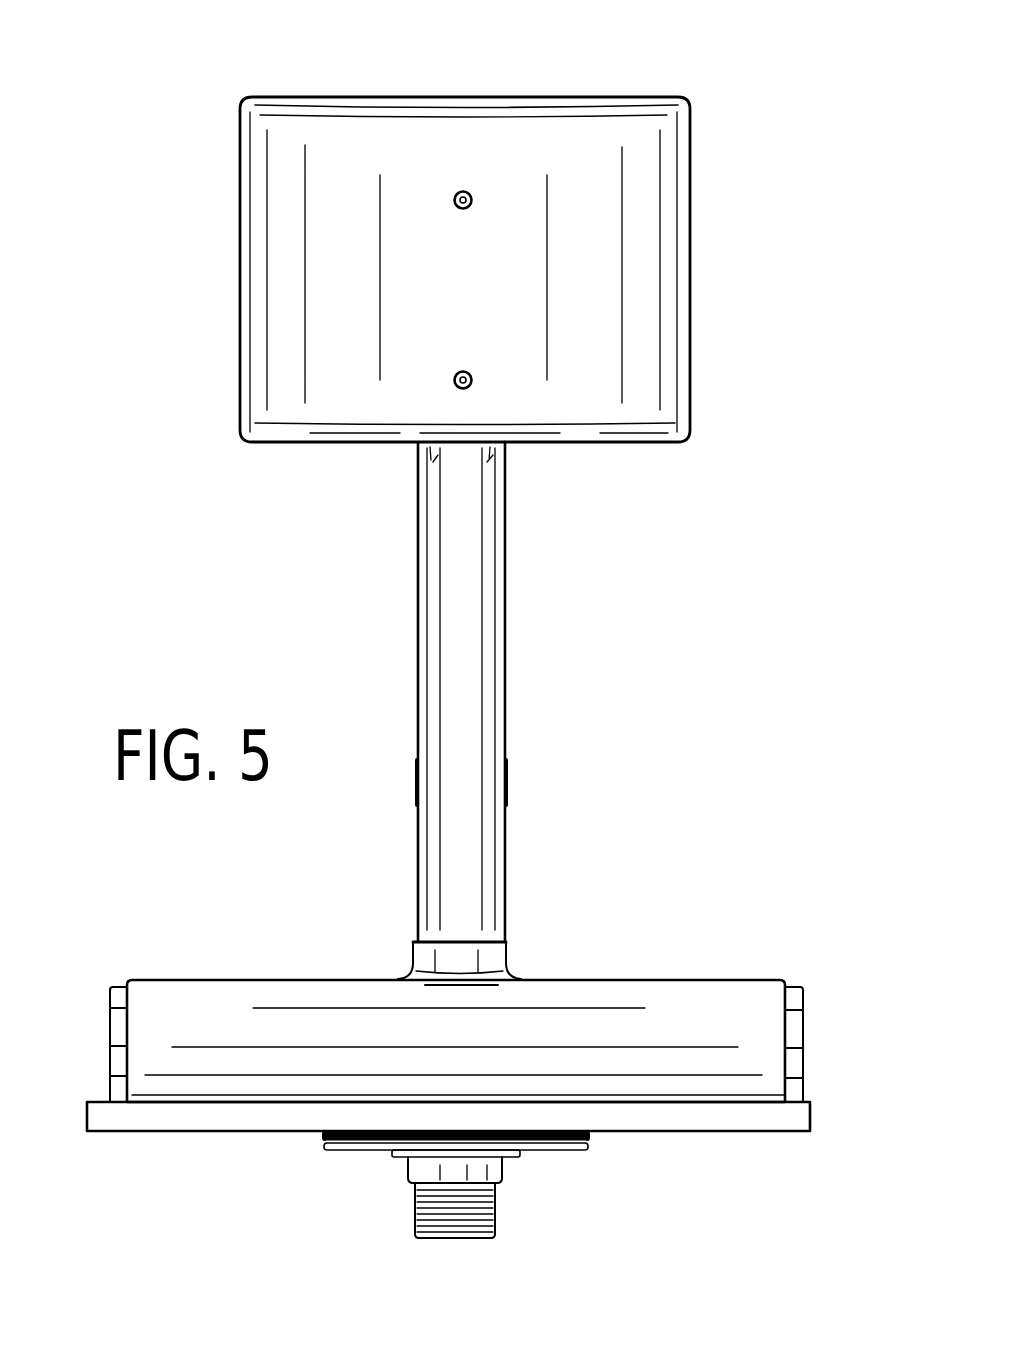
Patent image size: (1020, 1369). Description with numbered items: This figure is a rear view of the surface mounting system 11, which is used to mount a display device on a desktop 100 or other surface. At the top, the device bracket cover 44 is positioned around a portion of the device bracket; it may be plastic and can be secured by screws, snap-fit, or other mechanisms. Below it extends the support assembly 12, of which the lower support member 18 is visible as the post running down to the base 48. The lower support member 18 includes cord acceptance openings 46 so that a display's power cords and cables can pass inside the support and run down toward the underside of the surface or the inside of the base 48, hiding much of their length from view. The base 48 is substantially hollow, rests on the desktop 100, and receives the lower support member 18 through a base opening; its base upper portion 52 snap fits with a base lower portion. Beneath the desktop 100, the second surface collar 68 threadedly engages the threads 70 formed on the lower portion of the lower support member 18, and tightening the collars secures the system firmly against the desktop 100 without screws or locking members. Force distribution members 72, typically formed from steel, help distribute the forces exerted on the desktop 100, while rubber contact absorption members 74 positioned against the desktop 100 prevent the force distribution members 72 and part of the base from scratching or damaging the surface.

The surface mounting system 11 is at (496, 66).
The device bracket cover 44 is at (647, 440).
The cord acceptance openings 46 is at (417, 585).
The lower support member 18 is at (423, 697).
The support assembly 12 is at (505, 717).
The base 48 is at (558, 987).
The base upper portion 52 is at (673, 987).
The desktop 100 is at (190, 1131).
The force distribution members 72 is at (335, 1145).
The contact absorption members 74 is at (590, 1140).
The second surface collar 68 is at (505, 1160).
The threads 70 is at (425, 1213).